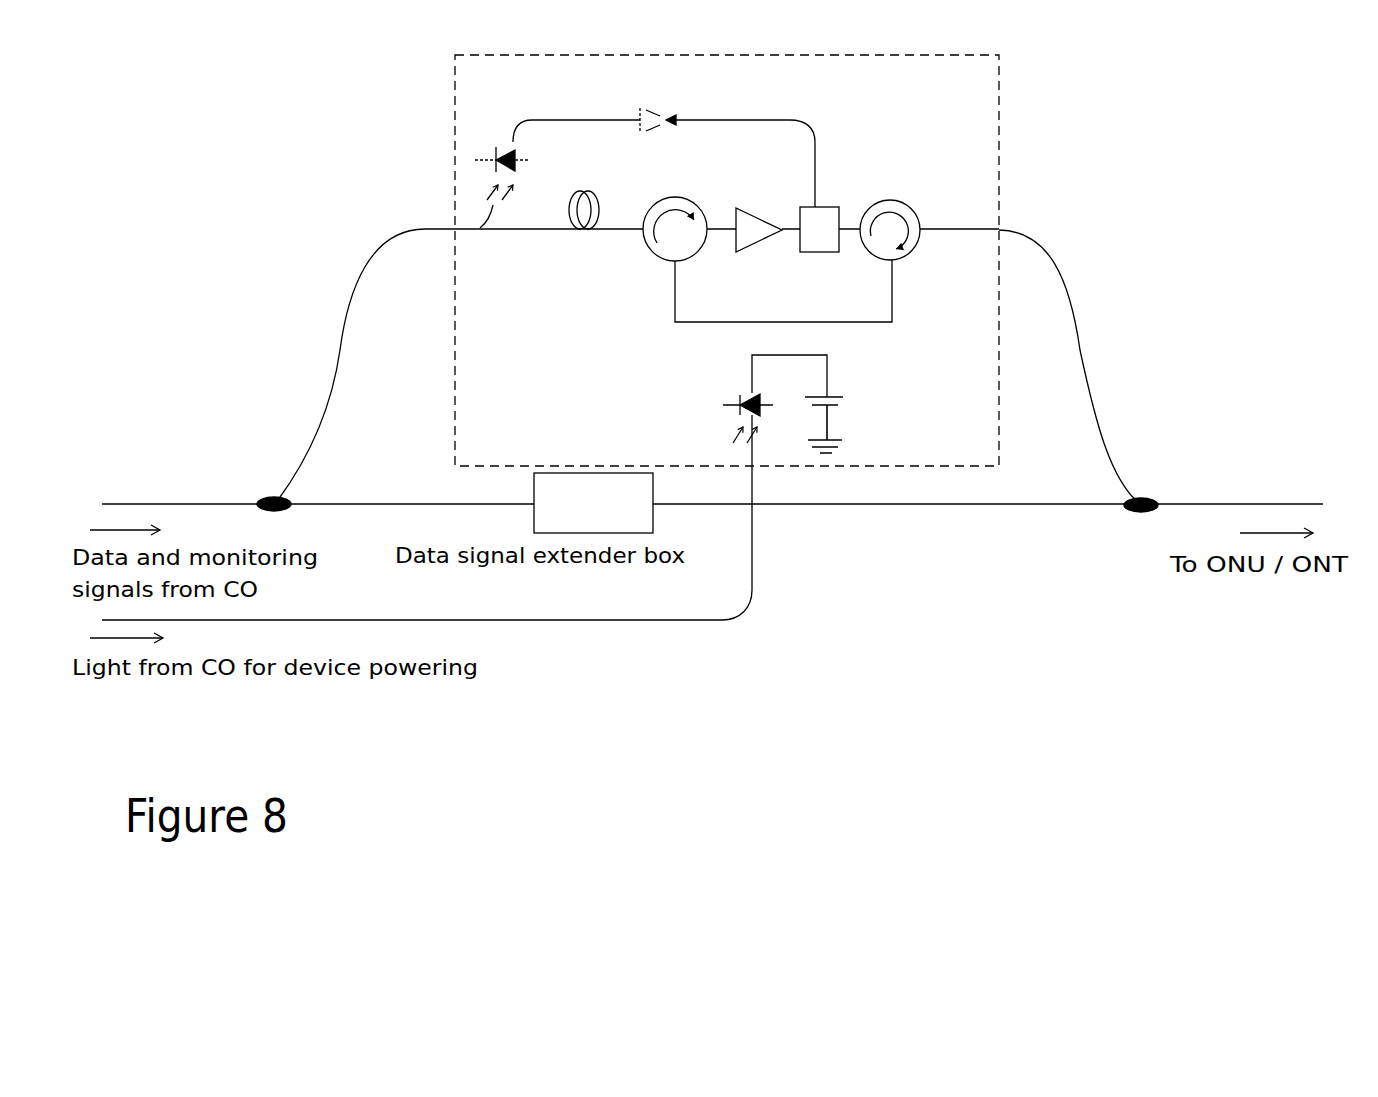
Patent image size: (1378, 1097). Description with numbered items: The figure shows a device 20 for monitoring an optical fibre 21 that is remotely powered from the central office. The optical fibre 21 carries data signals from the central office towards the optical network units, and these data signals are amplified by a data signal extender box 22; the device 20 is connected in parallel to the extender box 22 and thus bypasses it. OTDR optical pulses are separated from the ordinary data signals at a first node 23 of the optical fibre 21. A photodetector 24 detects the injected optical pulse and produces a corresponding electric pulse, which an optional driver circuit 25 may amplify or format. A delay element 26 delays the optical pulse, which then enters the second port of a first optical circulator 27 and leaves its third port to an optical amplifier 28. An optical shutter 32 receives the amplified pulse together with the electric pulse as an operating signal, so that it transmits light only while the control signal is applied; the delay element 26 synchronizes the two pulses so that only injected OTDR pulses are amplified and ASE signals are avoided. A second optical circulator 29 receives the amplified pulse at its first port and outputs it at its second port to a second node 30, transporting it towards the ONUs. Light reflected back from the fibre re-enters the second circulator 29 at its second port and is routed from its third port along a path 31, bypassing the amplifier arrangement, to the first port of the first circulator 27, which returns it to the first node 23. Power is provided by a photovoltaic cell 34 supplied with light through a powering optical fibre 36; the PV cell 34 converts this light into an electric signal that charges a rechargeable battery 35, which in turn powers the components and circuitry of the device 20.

The device for monitoring an optical fibre 20 is at (990, 98).
The optical fibre 21 is at (353, 500).
The data signal extender box 22 is at (593, 503).
The first node 23 is at (277, 487).
The photodetector 24 is at (493, 153).
The driver circuit 25 is at (682, 108).
The delay element 26 is at (572, 232).
The first optical circulator 27 is at (687, 193).
The optical amplifier 28 is at (747, 203).
The second optical circulator 29 is at (903, 188).
The second node 30 is at (1128, 517).
The path 31 is at (672, 310).
The optical shutter 32 is at (825, 197).
The photovoltaic (PV) cell 34 is at (732, 420).
The rechargeable battery 35 is at (833, 390).
The powering optical fibre 36 is at (757, 563).